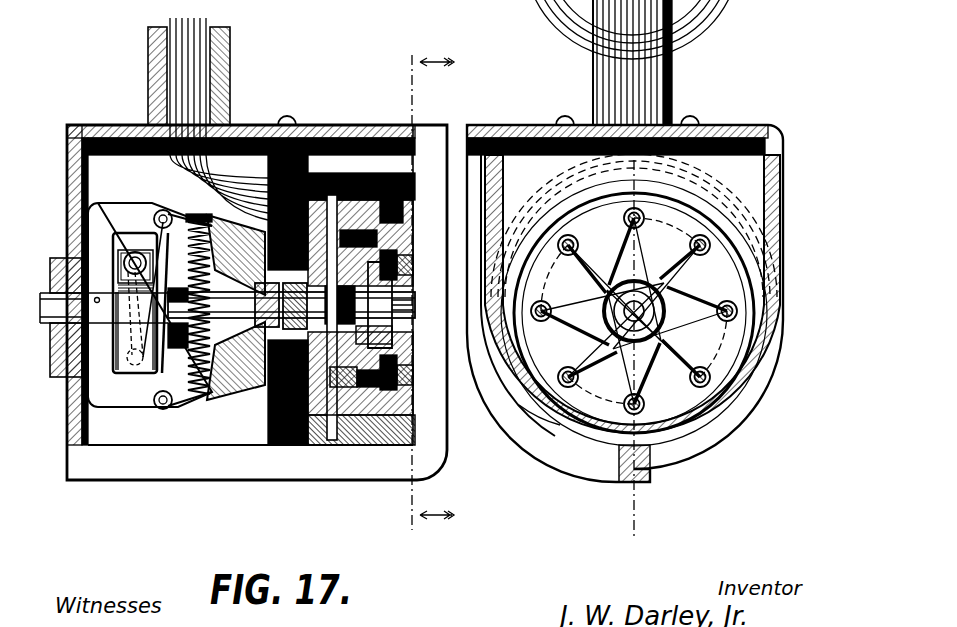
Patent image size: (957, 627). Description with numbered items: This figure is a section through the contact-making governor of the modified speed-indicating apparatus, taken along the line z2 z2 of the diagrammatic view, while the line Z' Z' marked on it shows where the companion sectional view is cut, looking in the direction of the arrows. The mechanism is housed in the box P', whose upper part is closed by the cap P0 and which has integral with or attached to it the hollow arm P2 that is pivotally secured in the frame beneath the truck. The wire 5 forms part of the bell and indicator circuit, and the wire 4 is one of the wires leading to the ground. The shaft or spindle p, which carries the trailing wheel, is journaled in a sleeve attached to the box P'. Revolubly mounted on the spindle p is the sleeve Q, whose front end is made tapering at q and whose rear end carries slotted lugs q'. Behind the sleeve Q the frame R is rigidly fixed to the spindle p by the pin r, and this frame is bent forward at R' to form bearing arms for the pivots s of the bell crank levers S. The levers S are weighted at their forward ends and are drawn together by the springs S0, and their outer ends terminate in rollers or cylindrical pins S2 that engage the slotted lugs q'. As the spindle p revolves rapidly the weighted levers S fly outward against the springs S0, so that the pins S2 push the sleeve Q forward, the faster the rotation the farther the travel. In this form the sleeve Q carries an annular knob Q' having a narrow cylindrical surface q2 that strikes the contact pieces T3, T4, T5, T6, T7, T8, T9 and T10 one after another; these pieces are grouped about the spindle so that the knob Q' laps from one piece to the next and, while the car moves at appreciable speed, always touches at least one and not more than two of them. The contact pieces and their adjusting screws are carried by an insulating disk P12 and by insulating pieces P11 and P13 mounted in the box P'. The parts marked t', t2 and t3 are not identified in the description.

The box P' is at (425, 287).
The hollow arm P2 is at (232, 62).
The insulating pieces P11 is at (347, 168).
The insulating disk P12 is at (264, 126).
The insulating pieces P13 is at (448, 130).
The cap P0 is at (537, 430).
The section line z' z' Z' is at (427, 300).
The section line z2 z2 is at (637, 363).
The wire 4 is at (512, 7).
The wire 5 is at (97, 0).
The shaft or spindle p is at (46, 327).
The tapering front end of sleeve q is at (46, 431).
The slotted lugs q' is at (49, 196).
The narrow cylindrical surface q2 is at (395, 342).
The bent-forward portion of frame R' is at (150, 282).
The frame R is at (99, 367).
The pin r is at (97, 313).
The rollers or cylindrical pins S2 is at (137, 255).
The pivots s is at (168, 221).
The bell crank levers S is at (236, 316).
The springs S0 is at (182, 382).
The sleeve Q is at (291, 306).
The annular knob Q' is at (582, 313).
The contact piece T3 is at (320, 405).
The contact piece T4 is at (362, 175).
The contact piece T5 is at (343, 390).
The contact piece T6 is at (520, 200).
The contact piece T7 is at (363, 287).
The contact piece T8 is at (537, 387).
The contact piece T9 is at (421, 178).
The contact piece T10 is at (604, 400).
The pin t' is at (609, 336).
The vane arm t2 is at (600, 457).
The vane link t3 is at (690, 420).